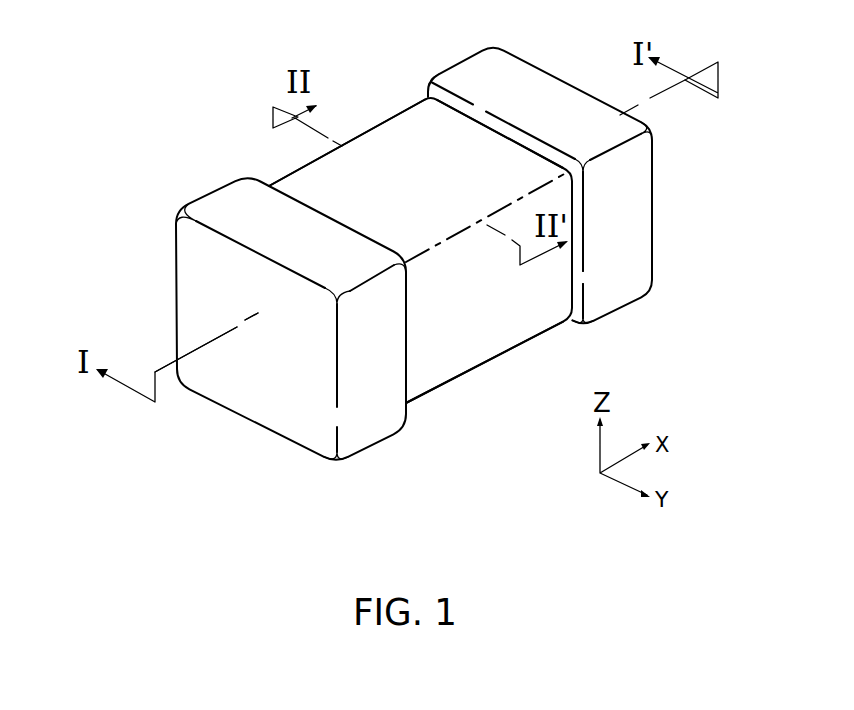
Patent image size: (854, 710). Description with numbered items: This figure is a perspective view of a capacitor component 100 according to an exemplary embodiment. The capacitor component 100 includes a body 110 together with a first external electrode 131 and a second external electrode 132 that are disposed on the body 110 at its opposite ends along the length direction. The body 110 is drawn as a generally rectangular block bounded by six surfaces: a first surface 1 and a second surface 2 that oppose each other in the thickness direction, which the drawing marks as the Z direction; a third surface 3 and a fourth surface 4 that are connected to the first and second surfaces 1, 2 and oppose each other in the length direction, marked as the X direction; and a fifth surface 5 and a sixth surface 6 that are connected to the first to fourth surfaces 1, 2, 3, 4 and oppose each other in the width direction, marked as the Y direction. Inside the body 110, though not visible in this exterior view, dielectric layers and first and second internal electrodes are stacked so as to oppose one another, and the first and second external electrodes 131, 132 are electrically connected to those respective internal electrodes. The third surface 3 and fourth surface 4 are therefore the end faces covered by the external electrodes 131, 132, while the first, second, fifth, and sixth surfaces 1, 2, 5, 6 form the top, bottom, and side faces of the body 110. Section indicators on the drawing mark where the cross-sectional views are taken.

The capacitor component 100 is at (232, 52).
The body 110 is at (296, 168).
The first external electrode 131 is at (230, 206).
The second external electrode 132 is at (467, 76).
The first surface 1 is at (452, 331).
The second surface 2 is at (428, 150).
The third surface 3 is at (260, 373).
The fourth surface 4 is at (606, 198).
The fifth surface 5 is at (503, 305).
The sixth surface 6 is at (380, 167).